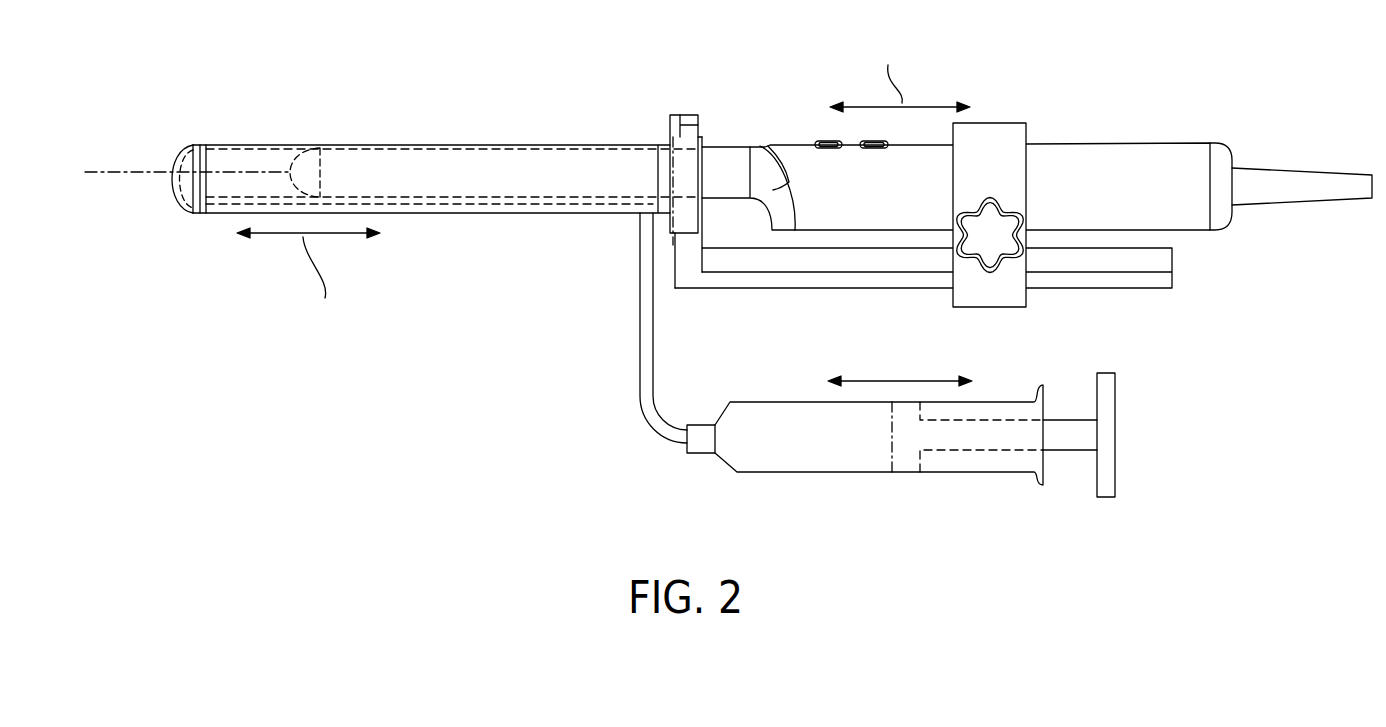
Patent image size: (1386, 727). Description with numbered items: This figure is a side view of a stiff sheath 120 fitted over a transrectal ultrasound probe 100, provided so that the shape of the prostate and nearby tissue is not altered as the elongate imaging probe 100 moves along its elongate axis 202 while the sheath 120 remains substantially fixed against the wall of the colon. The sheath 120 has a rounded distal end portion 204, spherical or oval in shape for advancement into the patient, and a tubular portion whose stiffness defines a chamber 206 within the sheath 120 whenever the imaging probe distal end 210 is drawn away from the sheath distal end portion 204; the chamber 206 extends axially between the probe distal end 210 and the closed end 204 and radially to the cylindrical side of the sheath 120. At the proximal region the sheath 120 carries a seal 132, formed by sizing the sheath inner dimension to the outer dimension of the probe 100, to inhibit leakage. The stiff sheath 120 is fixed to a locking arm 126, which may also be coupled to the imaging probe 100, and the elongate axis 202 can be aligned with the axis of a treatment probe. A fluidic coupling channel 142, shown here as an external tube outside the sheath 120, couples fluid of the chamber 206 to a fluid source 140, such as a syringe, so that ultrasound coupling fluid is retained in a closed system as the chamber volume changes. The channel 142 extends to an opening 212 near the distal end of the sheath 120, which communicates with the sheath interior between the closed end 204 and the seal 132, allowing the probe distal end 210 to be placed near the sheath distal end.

The transrectal ultrasound probe 100 is at (552, 143).
The stiff sheath 120 is at (237, 155).
The locking arm 126 is at (1065, 288).
The seal 132 is at (660, 172).
The fluid source 140 is at (822, 457).
The fluidic coupling channel 142 is at (543, 208).
The elongate axis 202 is at (130, 170).
The rounded distal end portion 204 is at (172, 180).
The chamber 206 is at (212, 163).
The imaging probe distal end 210 is at (292, 170).
The opening 212 is at (205, 203).